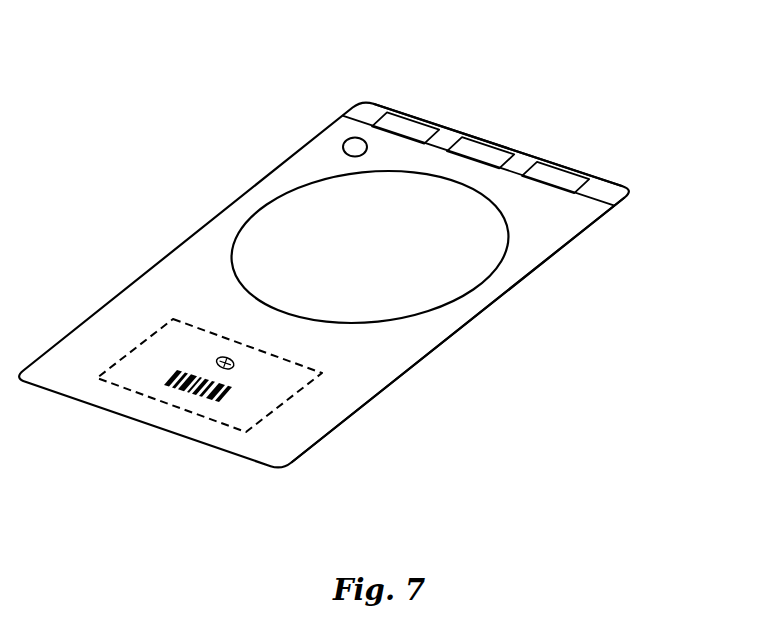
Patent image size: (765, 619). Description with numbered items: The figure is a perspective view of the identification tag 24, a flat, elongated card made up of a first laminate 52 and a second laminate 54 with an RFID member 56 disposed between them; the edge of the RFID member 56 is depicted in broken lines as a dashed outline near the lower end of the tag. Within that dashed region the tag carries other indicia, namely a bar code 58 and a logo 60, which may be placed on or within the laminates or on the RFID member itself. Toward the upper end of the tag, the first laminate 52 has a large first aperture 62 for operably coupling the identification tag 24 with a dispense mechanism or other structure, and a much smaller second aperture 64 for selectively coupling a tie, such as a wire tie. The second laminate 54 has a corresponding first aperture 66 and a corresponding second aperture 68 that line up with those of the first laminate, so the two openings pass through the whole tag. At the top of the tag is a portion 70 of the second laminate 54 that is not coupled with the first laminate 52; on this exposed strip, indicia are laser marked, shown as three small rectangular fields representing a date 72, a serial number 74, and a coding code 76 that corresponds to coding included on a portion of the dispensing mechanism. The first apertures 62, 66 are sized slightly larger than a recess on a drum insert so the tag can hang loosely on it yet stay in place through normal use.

The identification tag 24 is at (466, 105).
The first laminate 52 is at (398, 343).
The second laminate 54 is at (541, 270).
The RFID member 56 is at (285, 383).
The bar code 58 is at (147, 380).
The logo 60 is at (182, 351).
The first aperture 62 is at (299, 247).
The corresponding first aperture 66 is at (242, 231).
The second aperture 64 is at (276, 124).
The corresponding second aperture 68 is at (343, 145).
The portion of second laminate 70 is at (619, 194).
The date 72 is at (385, 103).
The serial number 74 is at (514, 146).
The coding code 76 is at (557, 181).